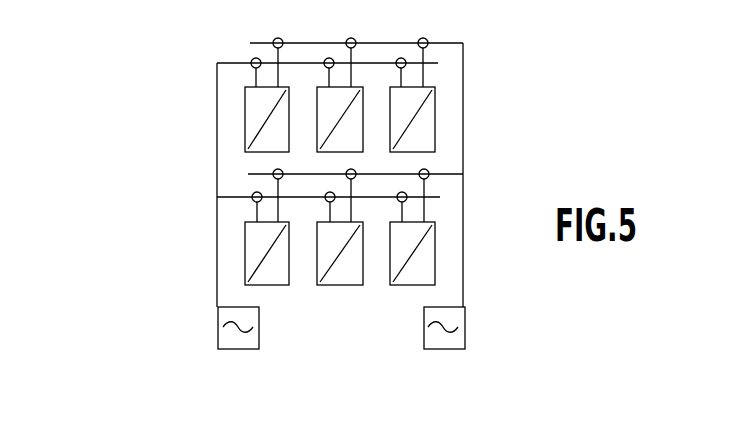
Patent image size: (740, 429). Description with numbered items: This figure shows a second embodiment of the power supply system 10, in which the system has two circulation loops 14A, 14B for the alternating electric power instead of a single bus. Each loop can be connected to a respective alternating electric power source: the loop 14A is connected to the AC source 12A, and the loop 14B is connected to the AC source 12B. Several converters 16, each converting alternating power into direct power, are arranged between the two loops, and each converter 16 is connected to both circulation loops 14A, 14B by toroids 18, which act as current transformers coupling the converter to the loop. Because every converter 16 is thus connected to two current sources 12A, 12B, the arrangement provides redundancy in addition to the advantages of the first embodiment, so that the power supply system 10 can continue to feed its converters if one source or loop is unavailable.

The power supply system 10 is at (267, 175).
The alternating electric power source 12A is at (259, 340).
The alternating electric power source 12B is at (423, 340).
The circulation loop 14A is at (216, 148).
The circulation loop 14B is at (463, 283).
The converter 16 is at (252, 118).
The toroid 18 is at (482, 186).